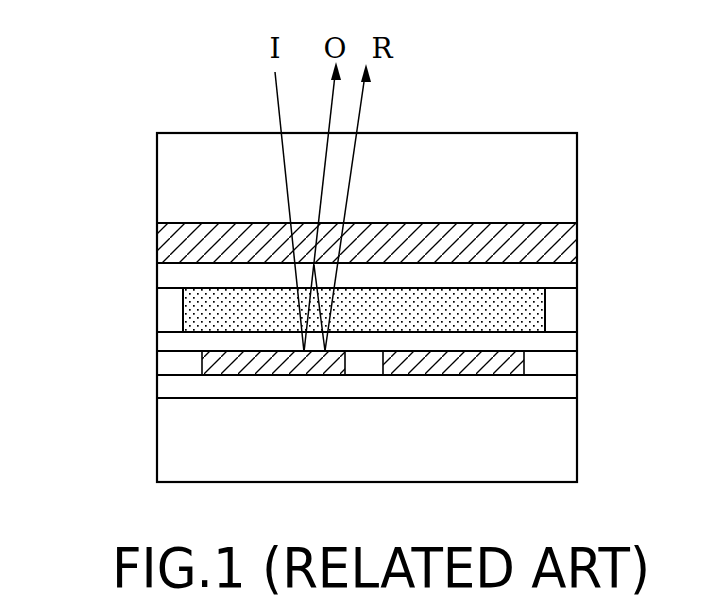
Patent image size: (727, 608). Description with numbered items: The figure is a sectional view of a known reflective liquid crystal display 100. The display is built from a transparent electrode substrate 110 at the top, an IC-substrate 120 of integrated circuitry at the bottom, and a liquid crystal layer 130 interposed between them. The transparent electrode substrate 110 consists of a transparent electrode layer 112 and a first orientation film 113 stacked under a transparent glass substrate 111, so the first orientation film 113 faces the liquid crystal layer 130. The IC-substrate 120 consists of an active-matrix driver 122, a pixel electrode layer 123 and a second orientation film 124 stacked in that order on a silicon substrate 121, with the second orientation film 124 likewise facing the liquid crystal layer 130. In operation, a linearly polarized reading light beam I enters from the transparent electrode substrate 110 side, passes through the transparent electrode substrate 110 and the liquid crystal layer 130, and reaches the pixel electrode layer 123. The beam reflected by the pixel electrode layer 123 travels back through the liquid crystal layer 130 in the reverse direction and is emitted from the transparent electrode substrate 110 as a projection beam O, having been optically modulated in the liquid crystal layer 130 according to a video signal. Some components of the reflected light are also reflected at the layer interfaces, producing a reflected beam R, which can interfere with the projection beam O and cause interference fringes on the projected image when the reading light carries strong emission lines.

The liquid crystal display 100 is at (36, 46).
The transparent electrode substrate 110 is at (147, 135).
The transparent glass substrate 111 is at (562, 190).
The transparent electrode layer 112 is at (560, 248).
The first orientation film 113 is at (562, 286).
The IC-substrate 120 is at (147, 352).
The silicon substrate 121 is at (548, 438).
The active-matrix driver 122 is at (560, 388).
The pixel electrode layer 123 is at (564, 372).
The second orientation film 124 is at (562, 346).
The liquid crystal layer 130 is at (283, 312).